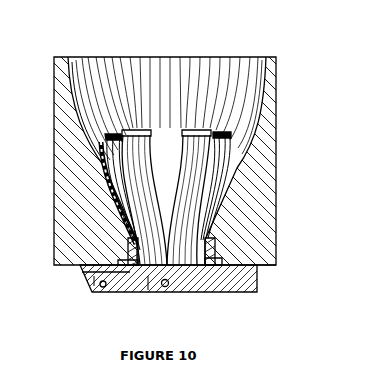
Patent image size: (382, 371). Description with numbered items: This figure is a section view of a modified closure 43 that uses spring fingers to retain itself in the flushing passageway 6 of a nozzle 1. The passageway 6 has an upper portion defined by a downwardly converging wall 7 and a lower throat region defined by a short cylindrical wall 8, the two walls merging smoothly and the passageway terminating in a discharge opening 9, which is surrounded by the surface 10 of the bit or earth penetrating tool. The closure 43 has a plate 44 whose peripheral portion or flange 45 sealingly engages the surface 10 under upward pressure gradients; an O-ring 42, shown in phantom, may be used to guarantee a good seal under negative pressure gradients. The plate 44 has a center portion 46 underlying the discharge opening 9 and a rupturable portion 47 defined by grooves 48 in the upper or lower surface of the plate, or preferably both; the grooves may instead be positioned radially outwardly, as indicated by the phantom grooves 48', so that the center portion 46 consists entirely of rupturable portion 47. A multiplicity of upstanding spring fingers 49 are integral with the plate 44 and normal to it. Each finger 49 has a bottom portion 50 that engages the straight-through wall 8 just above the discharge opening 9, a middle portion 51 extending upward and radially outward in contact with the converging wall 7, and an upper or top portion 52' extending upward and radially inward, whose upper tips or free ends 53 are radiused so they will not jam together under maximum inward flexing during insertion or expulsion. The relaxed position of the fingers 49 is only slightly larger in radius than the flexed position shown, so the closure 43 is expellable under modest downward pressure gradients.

The nozzle 1 is at (264, 96).
The flushing passageway 6 is at (169, 108).
The downwardly converging wall 7 is at (66, 100).
The cylindrical wall 8 is at (214, 222).
The discharge opening 9 is at (190, 186).
The surface 10 is at (268, 268).
The O-ring 42 is at (84, 270).
The closure 43 is at (82, 288).
The plate 44 is at (94, 294).
The peripheral portion or flange 45 is at (104, 294).
The center portion 46 is at (157, 292).
The rupturable portion 47 is at (166, 292).
The grooves 48 is at (217, 281).
The phantom grooves 48' is at (167, 284).
The spring fingers 49 is at (176, 168).
The bottom portion 50 is at (128, 236).
The middle portion 51 is at (118, 199).
The liner strip 52' is at (119, 180).
The upper tips or free ends 53 is at (129, 133).